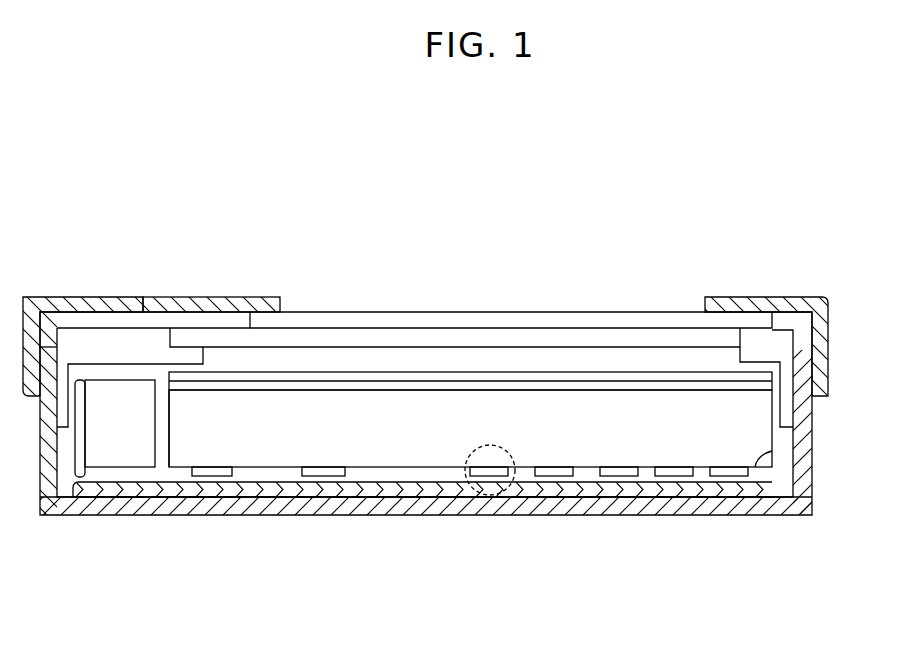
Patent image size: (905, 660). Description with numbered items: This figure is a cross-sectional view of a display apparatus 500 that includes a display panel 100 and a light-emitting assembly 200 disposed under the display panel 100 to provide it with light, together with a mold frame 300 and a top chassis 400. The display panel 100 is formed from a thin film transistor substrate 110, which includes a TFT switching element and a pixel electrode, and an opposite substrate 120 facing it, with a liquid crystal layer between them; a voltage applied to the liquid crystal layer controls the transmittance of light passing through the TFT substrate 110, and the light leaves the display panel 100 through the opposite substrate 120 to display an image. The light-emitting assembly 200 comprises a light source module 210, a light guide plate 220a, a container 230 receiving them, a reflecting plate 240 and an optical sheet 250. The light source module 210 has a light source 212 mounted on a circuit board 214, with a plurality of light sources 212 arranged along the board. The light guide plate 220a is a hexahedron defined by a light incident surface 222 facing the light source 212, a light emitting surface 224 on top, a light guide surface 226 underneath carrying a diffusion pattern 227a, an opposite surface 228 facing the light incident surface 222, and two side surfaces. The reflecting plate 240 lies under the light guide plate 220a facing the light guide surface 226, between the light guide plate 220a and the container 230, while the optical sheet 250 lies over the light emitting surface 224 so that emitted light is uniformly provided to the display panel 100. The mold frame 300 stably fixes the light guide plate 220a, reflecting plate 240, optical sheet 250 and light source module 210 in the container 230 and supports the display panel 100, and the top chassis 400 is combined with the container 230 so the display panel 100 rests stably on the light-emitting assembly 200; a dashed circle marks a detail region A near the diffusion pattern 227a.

The display apparatus 500 is at (376, 216).
The display panel 100 is at (583, 248).
The thin film transistor (TFT) substrate 110 is at (567, 340).
The opposite substrate 120 is at (503, 318).
The optical sheet 250 is at (643, 380).
The mold frame 300 is at (140, 338).
The top chassis 400 is at (203, 303).
The light-emitting assembly 200 is at (835, 345).
The light source module 210 is at (45, 577).
The light source 212 is at (120, 457).
The circuit board 214 is at (76, 478).
The light guide plate 220a is at (160, 577).
The light incident surface 222 is at (163, 450).
The light emitting surface 224 is at (235, 395).
The light guide surface 226 is at (278, 470).
The diffusion pattern 227a is at (325, 470).
The reflecting plate 240 is at (404, 488).
The container 230 is at (445, 505).
The opposite surface 228 is at (757, 470).
The region A is at (528, 492).